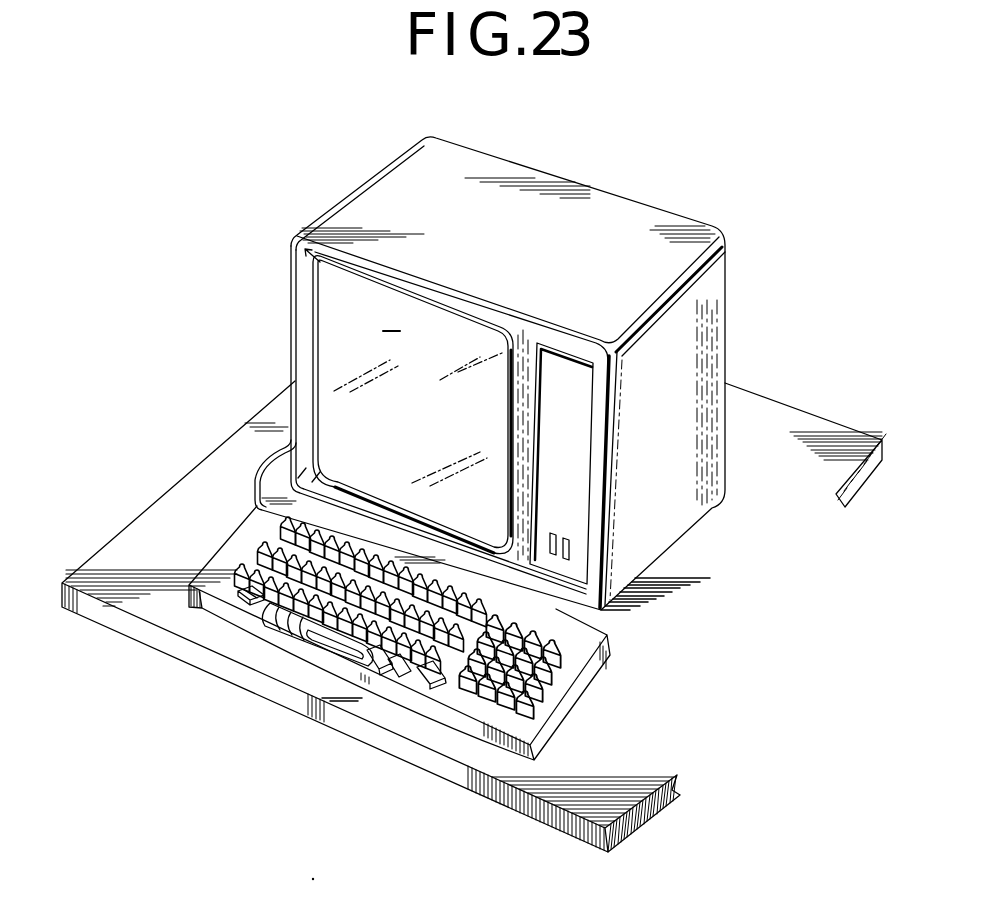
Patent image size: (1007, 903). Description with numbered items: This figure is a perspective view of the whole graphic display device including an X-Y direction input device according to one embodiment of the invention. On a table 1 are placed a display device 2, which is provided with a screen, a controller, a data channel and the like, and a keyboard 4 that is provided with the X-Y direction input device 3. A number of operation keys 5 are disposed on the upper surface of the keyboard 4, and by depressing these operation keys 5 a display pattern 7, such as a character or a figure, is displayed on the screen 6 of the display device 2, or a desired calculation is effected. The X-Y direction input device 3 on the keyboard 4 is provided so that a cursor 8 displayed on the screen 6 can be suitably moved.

The table 1 is at (232, 450).
The display device 2 is at (564, 193).
The X-Y direction input device 3 is at (310, 652).
The keyboard 4 is at (243, 537).
The operation keys 5 is at (243, 600).
The screen 6 is at (333, 391).
The display pattern 7 is at (343, 296).
The cursor 8 is at (386, 332).